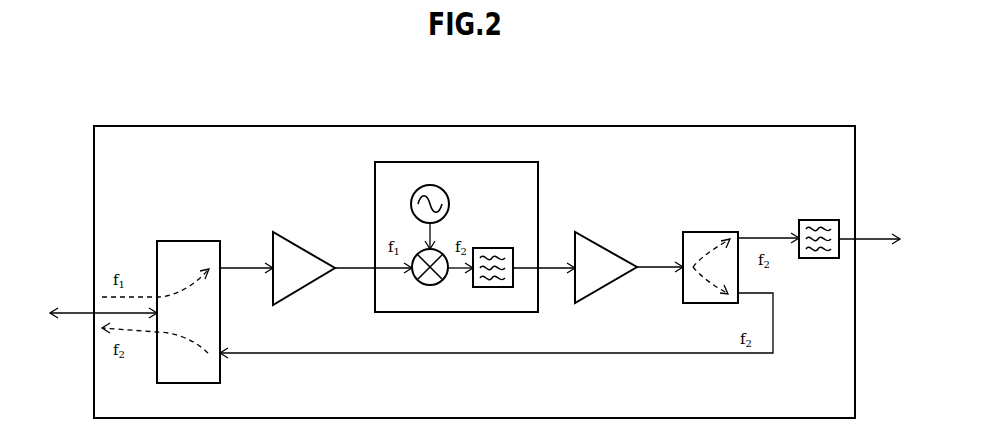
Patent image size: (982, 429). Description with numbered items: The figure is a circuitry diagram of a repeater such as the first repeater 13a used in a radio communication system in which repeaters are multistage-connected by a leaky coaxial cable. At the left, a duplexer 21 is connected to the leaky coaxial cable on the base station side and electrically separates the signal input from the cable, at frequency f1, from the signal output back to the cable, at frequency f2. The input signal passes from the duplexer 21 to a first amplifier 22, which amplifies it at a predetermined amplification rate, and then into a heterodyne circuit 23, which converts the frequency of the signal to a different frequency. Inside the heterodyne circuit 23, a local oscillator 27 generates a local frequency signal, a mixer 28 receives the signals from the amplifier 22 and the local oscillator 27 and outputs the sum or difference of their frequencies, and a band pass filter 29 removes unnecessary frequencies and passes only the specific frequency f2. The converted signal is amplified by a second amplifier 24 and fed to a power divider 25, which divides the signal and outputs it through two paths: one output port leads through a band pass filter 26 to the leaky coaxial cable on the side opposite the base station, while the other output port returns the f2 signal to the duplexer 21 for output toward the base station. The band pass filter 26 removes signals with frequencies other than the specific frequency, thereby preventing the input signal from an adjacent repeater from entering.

The first repeater 13a is at (116, 112).
The duplexer 21 is at (188, 250).
The first amplifier 22 is at (303, 258).
The heterodyne circuit 23 is at (541, 172).
The second amplifier 24 is at (604, 257).
The power divider 25 is at (710, 238).
The band pass filter 26 is at (832, 259).
The local oscillator 27 is at (436, 185).
The mixer 28 is at (430, 286).
The band pass filter 29 is at (488, 248).